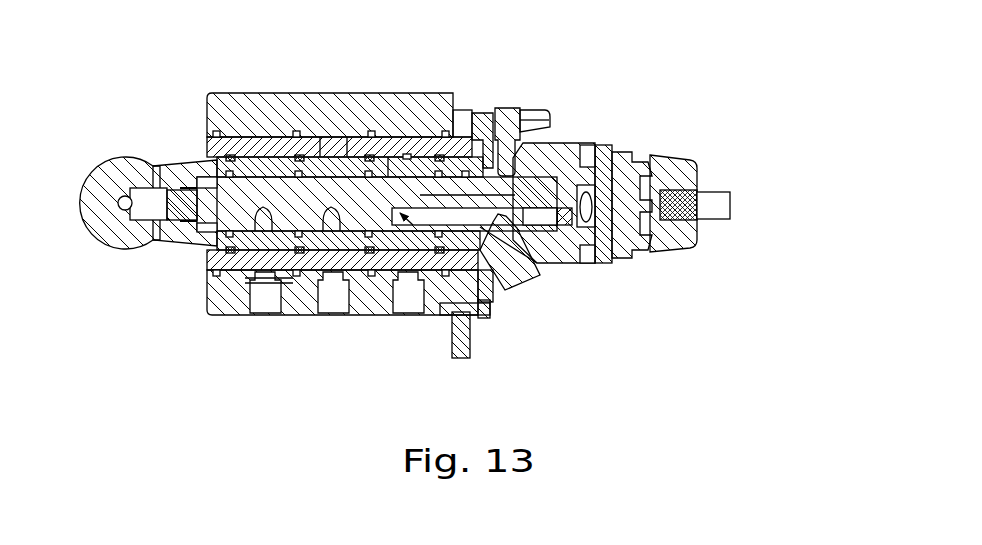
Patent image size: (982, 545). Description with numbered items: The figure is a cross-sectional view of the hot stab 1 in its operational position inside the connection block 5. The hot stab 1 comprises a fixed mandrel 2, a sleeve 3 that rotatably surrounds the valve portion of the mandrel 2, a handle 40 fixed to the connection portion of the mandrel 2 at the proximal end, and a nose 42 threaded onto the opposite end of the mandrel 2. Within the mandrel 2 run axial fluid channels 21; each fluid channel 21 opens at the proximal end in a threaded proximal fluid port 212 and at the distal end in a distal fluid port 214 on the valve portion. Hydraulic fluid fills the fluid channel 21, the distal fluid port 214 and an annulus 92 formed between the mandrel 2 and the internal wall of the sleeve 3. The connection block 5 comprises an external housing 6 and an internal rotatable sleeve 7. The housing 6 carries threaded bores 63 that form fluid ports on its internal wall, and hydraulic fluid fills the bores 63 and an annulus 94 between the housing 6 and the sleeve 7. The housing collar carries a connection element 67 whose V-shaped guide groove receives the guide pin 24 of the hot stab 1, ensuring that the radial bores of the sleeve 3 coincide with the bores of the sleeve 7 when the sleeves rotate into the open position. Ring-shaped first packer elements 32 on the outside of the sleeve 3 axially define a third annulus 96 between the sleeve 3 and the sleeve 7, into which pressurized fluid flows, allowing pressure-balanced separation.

The hot stab 1 is at (160, 150).
The connection block 5 is at (311, 199).
The external housing 6 is at (245, 137).
The sleeve 7 is at (250, 137).
The sleeve 3 is at (318, 137).
The annulus 94 is at (347, 137).
The annulus 92 is at (388, 157).
The third annulus 96 is at (405, 157).
The first packer element 32 is at (440, 133).
The guide pin 24 is at (510, 108).
The connection element 67 is at (545, 110).
The nose 42 is at (121, 248).
The bore 63 is at (250, 272).
The distal fluid port 214 is at (322, 232).
The fluid channel 21 is at (500, 250).
The proximal fluid port 212 is at (518, 240).
The mandrel 2 is at (568, 240).
The handle 40 is at (698, 222).